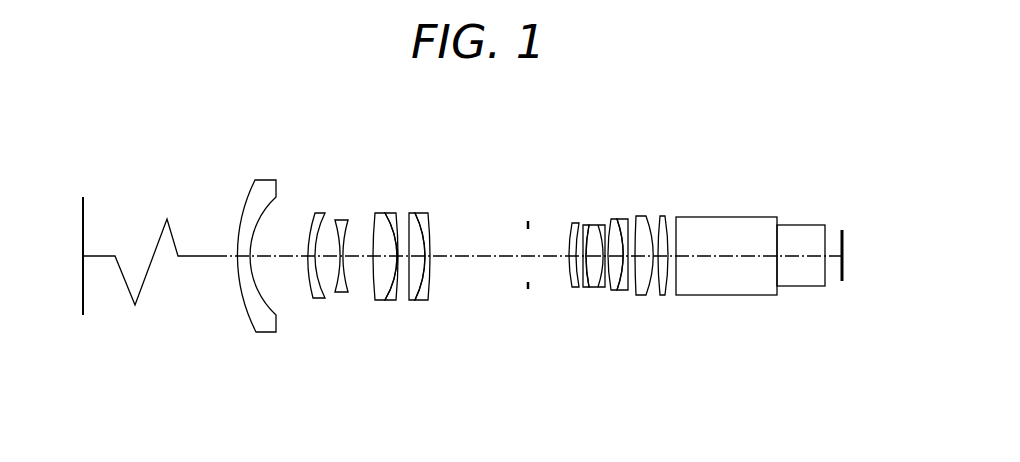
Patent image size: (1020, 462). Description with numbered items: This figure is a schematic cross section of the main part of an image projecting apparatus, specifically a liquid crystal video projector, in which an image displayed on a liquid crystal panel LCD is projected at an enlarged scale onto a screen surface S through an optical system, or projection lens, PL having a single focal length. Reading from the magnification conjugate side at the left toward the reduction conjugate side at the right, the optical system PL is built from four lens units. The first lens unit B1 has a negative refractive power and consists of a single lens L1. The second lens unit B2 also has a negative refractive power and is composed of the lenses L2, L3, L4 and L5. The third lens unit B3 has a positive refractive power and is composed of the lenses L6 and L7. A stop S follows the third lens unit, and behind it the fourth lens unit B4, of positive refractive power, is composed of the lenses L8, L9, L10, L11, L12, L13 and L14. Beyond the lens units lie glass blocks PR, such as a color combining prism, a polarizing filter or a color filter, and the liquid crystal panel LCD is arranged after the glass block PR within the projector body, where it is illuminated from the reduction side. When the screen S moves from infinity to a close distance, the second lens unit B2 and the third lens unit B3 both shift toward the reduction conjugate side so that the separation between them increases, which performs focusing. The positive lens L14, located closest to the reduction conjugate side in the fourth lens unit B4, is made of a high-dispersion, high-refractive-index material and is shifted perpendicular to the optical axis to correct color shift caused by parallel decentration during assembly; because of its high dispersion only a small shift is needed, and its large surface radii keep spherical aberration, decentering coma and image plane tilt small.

The screen surface / stop S is at (85, 197).
The optical system (projection lens) PL is at (722, 122).
The first lens unit B1 is at (269, 252).
The second lens unit B2 is at (349, 276).
The third lens unit B3 is at (439, 287).
The fourth lens unit B4 is at (629, 250).
The lens L1 is at (263, 178).
The lens L2 is at (315, 213).
The lens L3 is at (338, 220).
The lens L4 is at (375, 215).
The lens L5 is at (390, 213).
The lens L6 is at (418, 213).
The lens L7 is at (430, 218).
The lens L8 is at (572, 222).
The lens L9 is at (585, 224).
The lens L10 is at (600, 224).
The lens L11 is at (612, 218).
The lens L12 is at (622, 217).
The lens L13 is at (640, 215).
The positive lens L14 is at (668, 216).
The glass block PR is at (825, 333).
The liquid crystal panel LCD is at (842, 229).